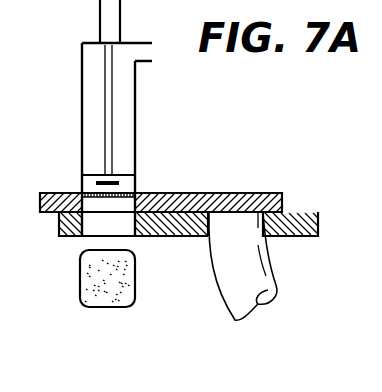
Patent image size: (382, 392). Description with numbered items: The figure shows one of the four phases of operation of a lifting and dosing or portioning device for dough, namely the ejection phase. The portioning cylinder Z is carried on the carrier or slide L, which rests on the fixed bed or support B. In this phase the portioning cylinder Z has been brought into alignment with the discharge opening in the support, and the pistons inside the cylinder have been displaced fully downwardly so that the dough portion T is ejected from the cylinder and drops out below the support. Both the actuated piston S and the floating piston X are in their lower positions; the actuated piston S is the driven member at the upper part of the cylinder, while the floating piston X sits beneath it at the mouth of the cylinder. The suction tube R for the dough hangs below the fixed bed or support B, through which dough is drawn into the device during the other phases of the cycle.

The portioning cylinder Z is at (82, 132).
The actuated piston S is at (82, 180).
The floating piston X is at (150, 194).
The carrier or slide L is at (256, 198).
The fixed bed or support B is at (318, 224).
The suction tube R is at (253, 275).
The dough portion T is at (90, 283).